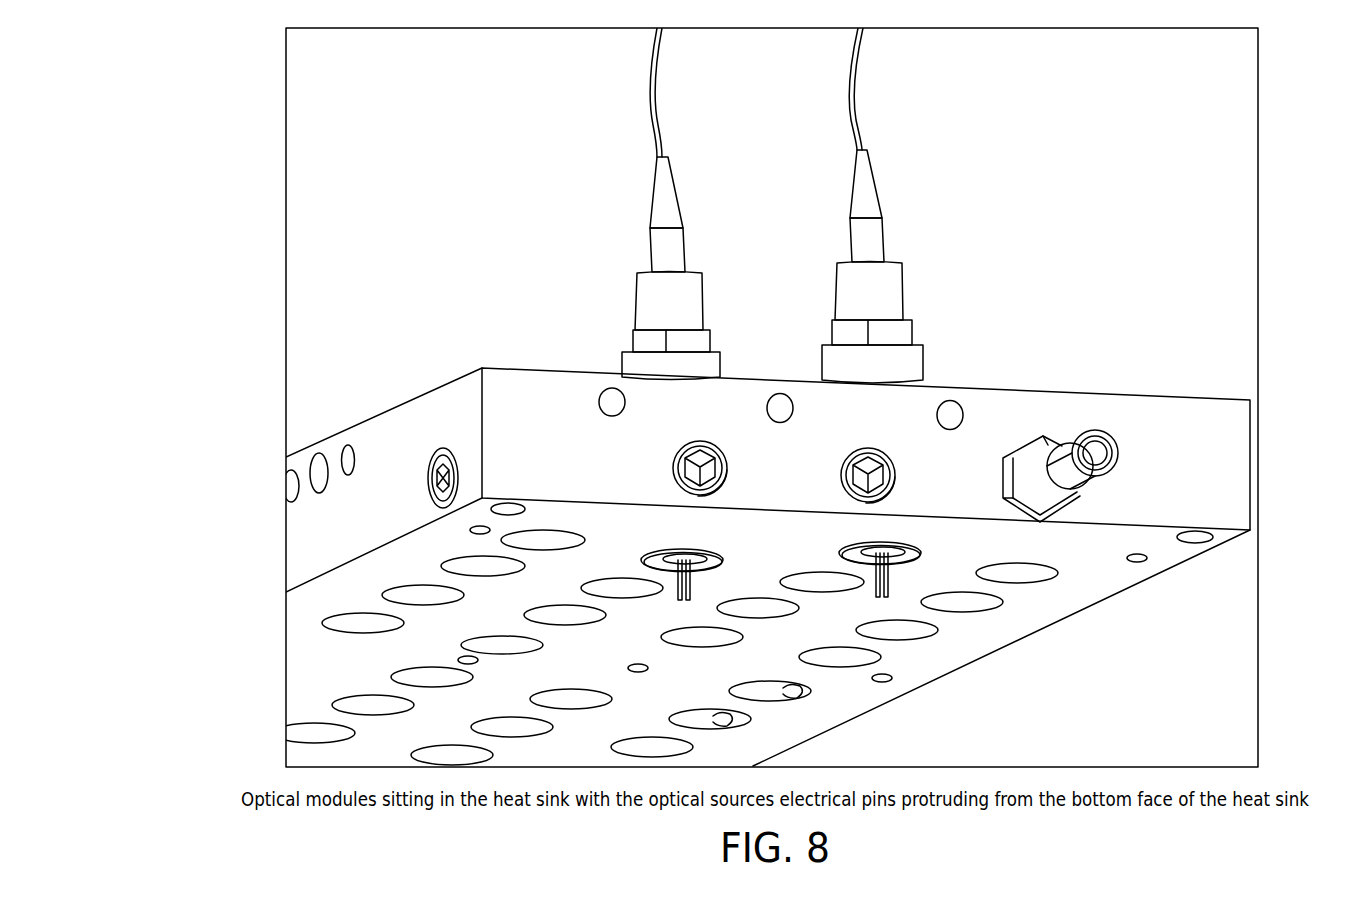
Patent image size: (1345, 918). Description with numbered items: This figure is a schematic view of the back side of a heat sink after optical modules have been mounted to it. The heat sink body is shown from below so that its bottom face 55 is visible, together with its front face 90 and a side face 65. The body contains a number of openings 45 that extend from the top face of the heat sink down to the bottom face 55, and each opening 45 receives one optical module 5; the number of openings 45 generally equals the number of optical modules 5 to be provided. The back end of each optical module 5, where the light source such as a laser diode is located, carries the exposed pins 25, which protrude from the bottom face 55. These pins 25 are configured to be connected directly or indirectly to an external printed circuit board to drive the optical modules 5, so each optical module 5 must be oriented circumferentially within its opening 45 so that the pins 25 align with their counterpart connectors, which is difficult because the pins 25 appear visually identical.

The optical module 5 is at (713, 212).
The pins 25 is at (683, 604).
The openings 45 is at (715, 717).
The bottom face 55 is at (1096, 565).
The side face 65 is at (1210, 466).
The front face 90 is at (323, 547).